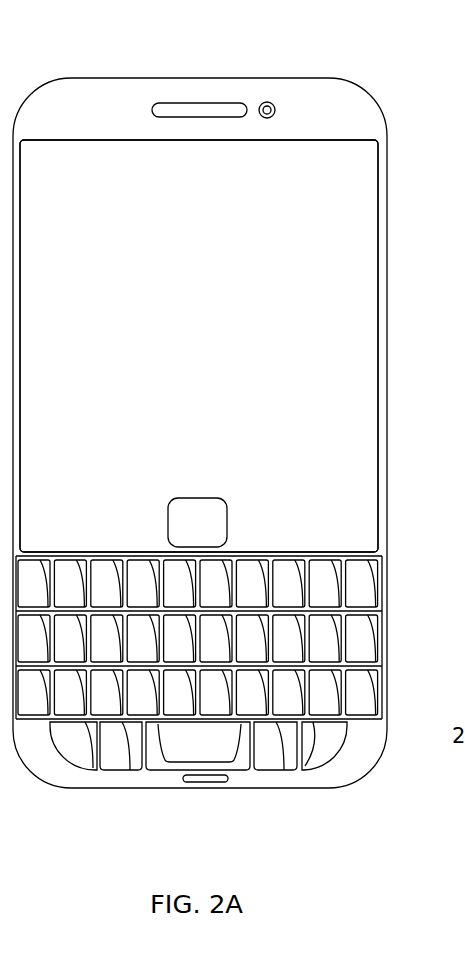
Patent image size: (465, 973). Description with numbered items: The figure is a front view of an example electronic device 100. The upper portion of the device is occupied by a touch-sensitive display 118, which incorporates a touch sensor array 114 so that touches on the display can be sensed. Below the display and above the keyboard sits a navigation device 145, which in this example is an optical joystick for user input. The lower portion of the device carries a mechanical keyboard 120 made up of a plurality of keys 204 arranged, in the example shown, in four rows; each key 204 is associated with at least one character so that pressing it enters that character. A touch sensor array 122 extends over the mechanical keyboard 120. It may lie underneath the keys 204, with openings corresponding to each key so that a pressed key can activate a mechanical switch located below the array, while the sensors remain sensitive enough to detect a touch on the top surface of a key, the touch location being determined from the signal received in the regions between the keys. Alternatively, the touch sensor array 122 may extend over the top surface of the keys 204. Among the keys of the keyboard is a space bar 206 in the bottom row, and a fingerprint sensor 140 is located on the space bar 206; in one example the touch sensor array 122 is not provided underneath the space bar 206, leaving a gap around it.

The electronic device 100 is at (124, 55).
The touch-sensitive display 118 is at (374, 163).
The touch sensor array 114 is at (374, 203).
The navigation device 145 is at (197, 523).
The mechanical keyboard 120 is at (234, 684).
The keys 204 is at (372, 597).
The touch sensor array 122 is at (372, 645).
The fingerprint sensor 140 is at (200, 783).
The space bar 206 is at (222, 740).